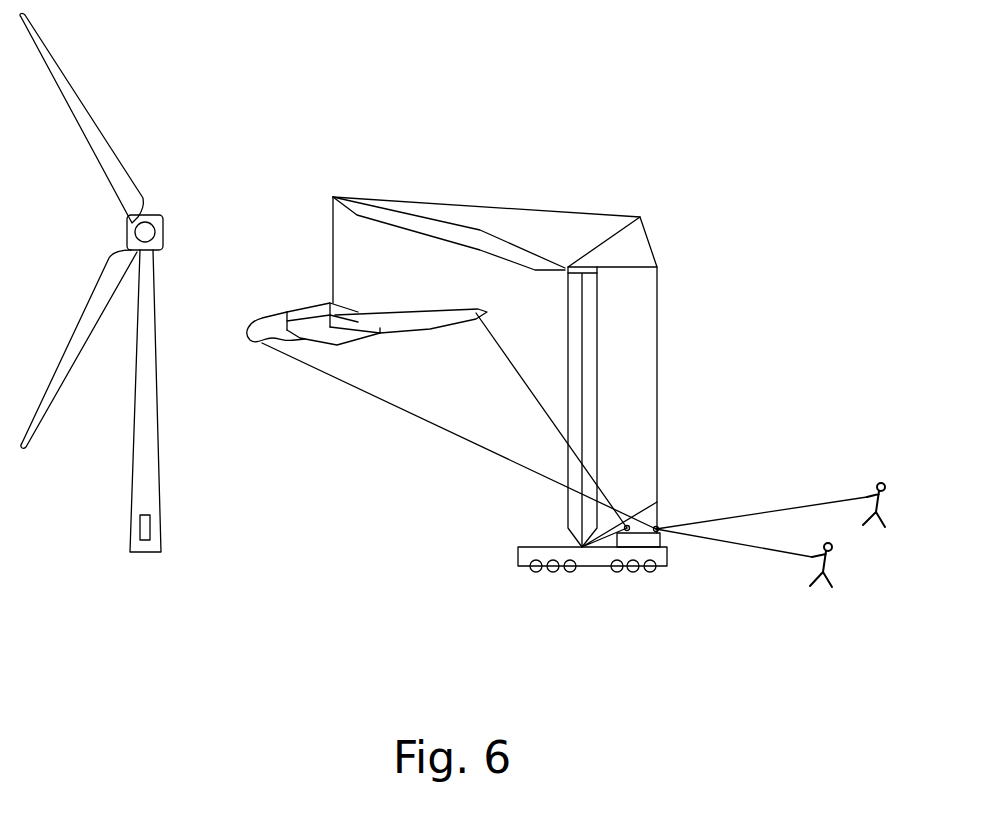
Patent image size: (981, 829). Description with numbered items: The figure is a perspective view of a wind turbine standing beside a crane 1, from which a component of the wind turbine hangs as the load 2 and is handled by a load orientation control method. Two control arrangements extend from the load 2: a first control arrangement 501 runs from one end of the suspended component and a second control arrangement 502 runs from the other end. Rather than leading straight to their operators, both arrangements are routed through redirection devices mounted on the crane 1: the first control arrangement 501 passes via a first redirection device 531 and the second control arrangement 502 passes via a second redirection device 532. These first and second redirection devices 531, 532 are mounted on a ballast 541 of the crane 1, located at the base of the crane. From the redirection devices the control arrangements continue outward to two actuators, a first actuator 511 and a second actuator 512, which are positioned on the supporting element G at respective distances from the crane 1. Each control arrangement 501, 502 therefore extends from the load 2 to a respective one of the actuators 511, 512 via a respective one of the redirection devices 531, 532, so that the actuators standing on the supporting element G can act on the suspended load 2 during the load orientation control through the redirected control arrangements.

The crane 1 is at (672, 370).
The load 2 is at (303, 293).
The first control arrangement 501 is at (487, 378).
The second control arrangement 502 is at (455, 452).
The first actuator 511 is at (855, 578).
The second actuator 512 is at (899, 490).
The first redirection device 531 is at (625, 530).
The second redirection device 532 is at (658, 528).
The ballast 541 is at (662, 545).
The supporting element G is at (440, 607).